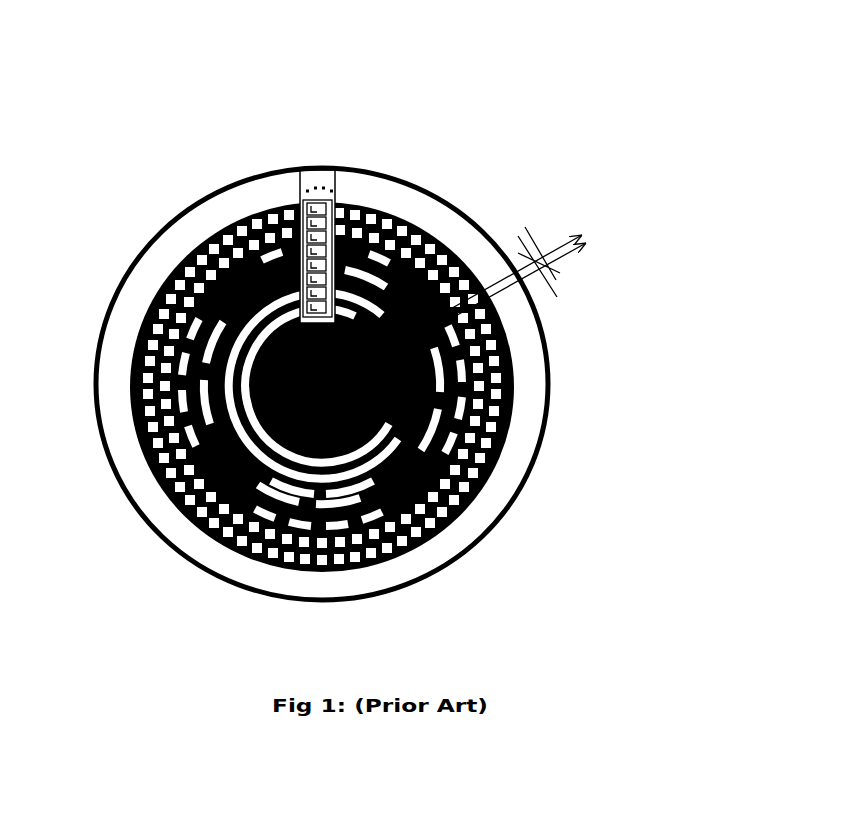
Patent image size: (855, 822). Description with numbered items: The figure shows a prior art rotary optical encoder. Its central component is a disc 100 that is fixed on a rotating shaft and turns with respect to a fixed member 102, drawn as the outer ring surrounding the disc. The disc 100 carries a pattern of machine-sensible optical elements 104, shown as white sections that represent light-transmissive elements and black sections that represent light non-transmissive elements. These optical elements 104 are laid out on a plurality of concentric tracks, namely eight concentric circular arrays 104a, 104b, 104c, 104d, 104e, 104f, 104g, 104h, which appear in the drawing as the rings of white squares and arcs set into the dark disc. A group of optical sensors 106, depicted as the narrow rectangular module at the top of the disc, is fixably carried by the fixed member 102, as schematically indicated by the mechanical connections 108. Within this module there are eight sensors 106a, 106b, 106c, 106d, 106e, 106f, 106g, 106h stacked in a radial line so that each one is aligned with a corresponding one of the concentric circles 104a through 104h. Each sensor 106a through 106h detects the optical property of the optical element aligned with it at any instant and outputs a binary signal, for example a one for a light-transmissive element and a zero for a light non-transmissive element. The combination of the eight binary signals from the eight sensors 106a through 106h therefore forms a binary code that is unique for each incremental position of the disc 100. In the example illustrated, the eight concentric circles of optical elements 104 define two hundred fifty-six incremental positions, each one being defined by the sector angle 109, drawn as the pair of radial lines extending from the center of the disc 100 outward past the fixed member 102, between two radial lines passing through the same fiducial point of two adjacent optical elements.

The disc 100 is at (575, 377).
The fixed member 102 is at (277, 166).
The optical elements 104 is at (183, 343).
The concentric circular array 104a is at (150, 331).
The concentric circular array 104b is at (140, 354).
The concentric circular array 104c is at (172, 372).
The concentric circular array 104d is at (167, 387).
The concentric circular array 104e is at (182, 410).
The concentric circular array 104f is at (207, 400).
The concentric circular array 104g is at (223, 410).
The concentric circular array 104h is at (237, 417).
The optical sensors 106 is at (293, 190).
The sensor 106a is at (330, 209).
The sensor 106b is at (330, 223).
The sensor 106c is at (330, 237).
The sensor 106d is at (330, 251).
The sensor 106e is at (330, 265).
The sensor 106f is at (330, 279).
The sensor 106g is at (330, 293).
The sensor 106h is at (330, 307).
The mechanical connections 108 is at (313, 167).
The sector angle 109 is at (463, 306).